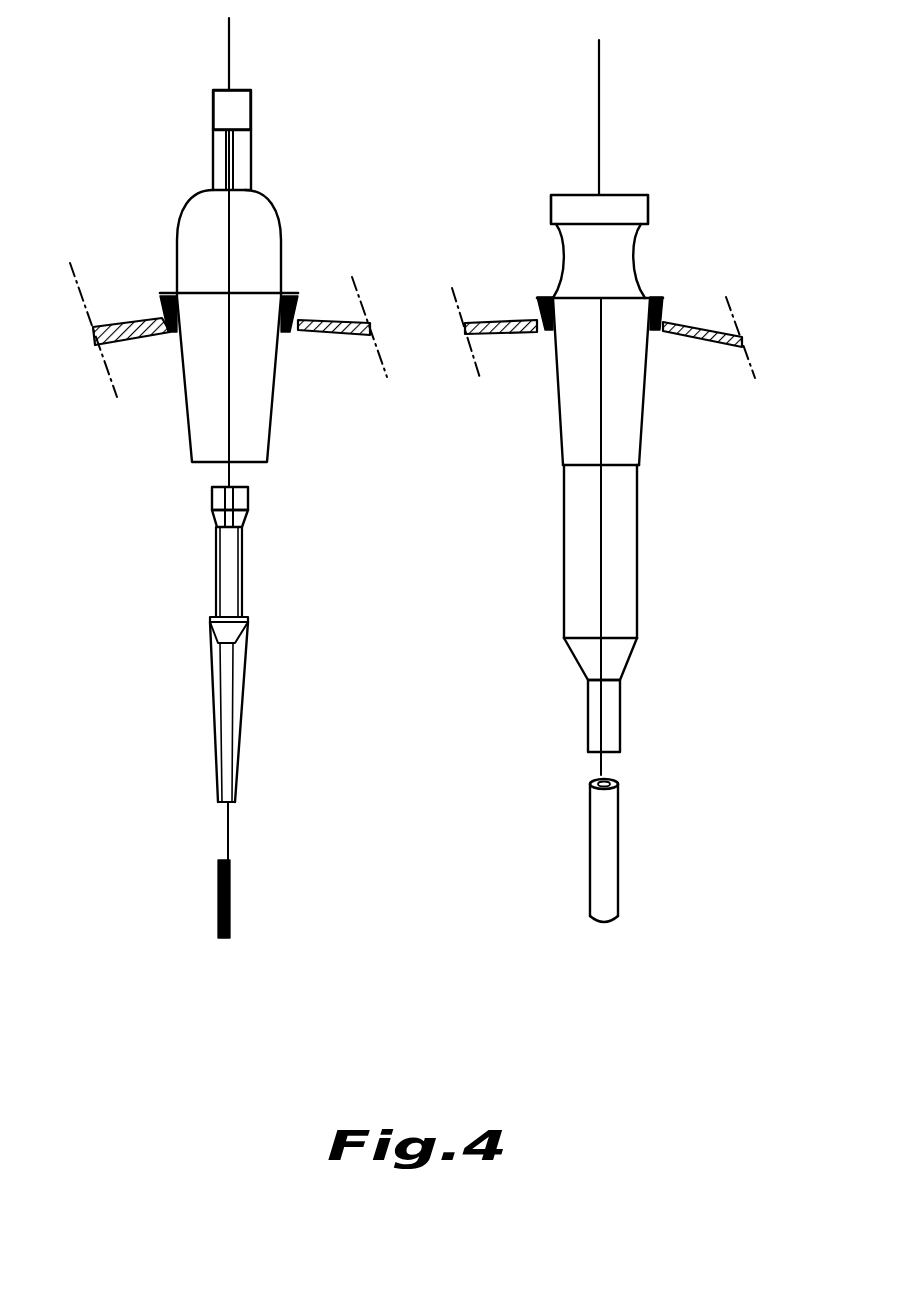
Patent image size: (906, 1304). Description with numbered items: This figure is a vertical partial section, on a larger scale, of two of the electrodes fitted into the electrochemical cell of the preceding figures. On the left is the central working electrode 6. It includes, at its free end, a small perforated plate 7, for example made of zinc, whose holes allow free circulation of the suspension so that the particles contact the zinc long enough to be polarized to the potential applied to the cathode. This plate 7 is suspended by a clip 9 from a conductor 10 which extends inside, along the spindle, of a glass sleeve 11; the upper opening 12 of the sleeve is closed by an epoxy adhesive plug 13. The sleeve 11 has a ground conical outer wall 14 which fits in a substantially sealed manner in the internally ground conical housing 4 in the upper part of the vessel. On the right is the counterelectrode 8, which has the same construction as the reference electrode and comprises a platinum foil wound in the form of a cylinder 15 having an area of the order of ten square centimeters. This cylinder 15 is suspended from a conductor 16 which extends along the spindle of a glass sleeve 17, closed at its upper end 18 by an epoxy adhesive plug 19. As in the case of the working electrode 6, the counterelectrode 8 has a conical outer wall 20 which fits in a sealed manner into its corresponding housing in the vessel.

The conical housing 4 is at (160, 293).
The working electrode 6 is at (252, 553).
The plate 7 is at (218, 903).
The counterelectrode 8 is at (648, 460).
The clip 9 is at (227, 702).
The conductor 10 is at (225, 403).
The glass sleeve 11 is at (277, 392).
The upper opening 12 is at (212, 106).
The epoxy adhesive plug 13 is at (236, 108).
The ground conical outer wall 14 is at (294, 295).
The cylinder 15 is at (628, 850).
The conductor 16 is at (603, 573).
The glass sleeve 17 is at (564, 519).
The upper end 18 is at (635, 265).
The epoxy adhesive plug 19 is at (608, 232).
The conical outer wall 20 is at (537, 297).